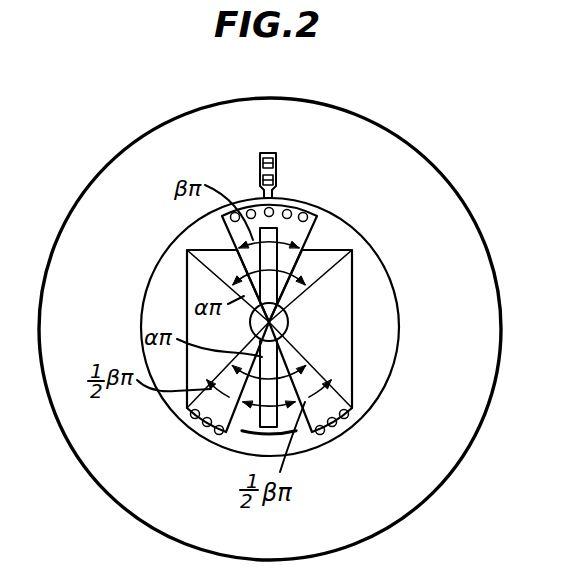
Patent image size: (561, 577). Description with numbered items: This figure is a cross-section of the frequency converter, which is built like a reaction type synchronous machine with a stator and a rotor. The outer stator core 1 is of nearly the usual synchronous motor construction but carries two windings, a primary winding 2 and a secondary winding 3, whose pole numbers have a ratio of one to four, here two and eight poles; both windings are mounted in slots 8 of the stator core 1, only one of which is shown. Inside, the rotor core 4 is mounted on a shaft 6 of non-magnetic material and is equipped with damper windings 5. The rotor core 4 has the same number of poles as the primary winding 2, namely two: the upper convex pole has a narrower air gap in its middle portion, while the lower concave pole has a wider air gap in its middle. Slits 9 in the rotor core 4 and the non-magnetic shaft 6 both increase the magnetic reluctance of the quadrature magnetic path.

The stator core 1 is at (432, 185).
The primary winding 2 is at (277, 154).
The secondary winding 3 is at (277, 191).
The rotor core 4 is at (374, 255).
The damper windings 5 is at (317, 213).
The shaft 6 is at (289, 316).
The slots 8 is at (258, 153).
The slits 9 is at (272, 358).